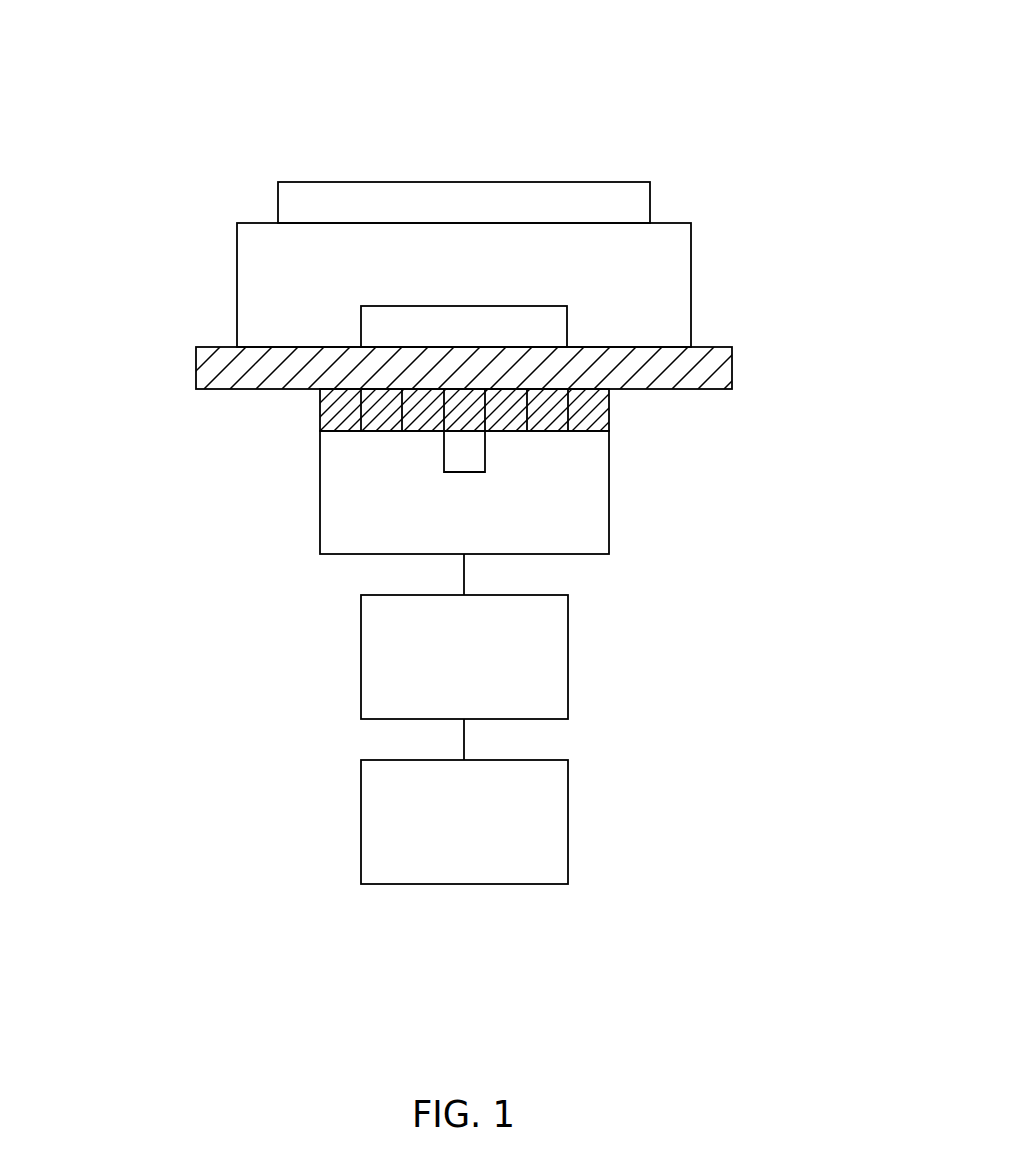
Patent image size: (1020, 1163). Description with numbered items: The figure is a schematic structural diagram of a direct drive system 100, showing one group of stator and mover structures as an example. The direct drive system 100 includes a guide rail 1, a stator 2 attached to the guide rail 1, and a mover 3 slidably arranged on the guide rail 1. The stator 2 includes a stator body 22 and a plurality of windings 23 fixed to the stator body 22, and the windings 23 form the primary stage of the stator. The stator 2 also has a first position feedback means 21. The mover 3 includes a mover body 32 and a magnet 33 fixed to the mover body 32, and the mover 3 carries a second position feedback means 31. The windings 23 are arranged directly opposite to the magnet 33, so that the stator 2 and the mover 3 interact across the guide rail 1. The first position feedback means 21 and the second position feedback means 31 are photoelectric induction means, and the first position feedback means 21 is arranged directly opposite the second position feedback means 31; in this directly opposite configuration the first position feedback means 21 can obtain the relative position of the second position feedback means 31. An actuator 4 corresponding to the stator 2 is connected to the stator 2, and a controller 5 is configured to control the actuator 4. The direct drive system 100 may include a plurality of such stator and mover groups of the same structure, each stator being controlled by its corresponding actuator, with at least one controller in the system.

The direct drive system 100 is at (387, 51).
The guide rail 1 is at (732, 367).
The stator 2 is at (278, 503).
The first position feedback means 21 is at (444, 450).
The stator body 22 is at (609, 492).
The windings 23 is at (609, 408).
The mover 3 is at (200, 233).
The second position feedback means 31 is at (650, 203).
The mover body 32 is at (691, 287).
The magnet 33 is at (361, 327).
The actuator 4 is at (568, 656).
The controller 5 is at (361, 822).